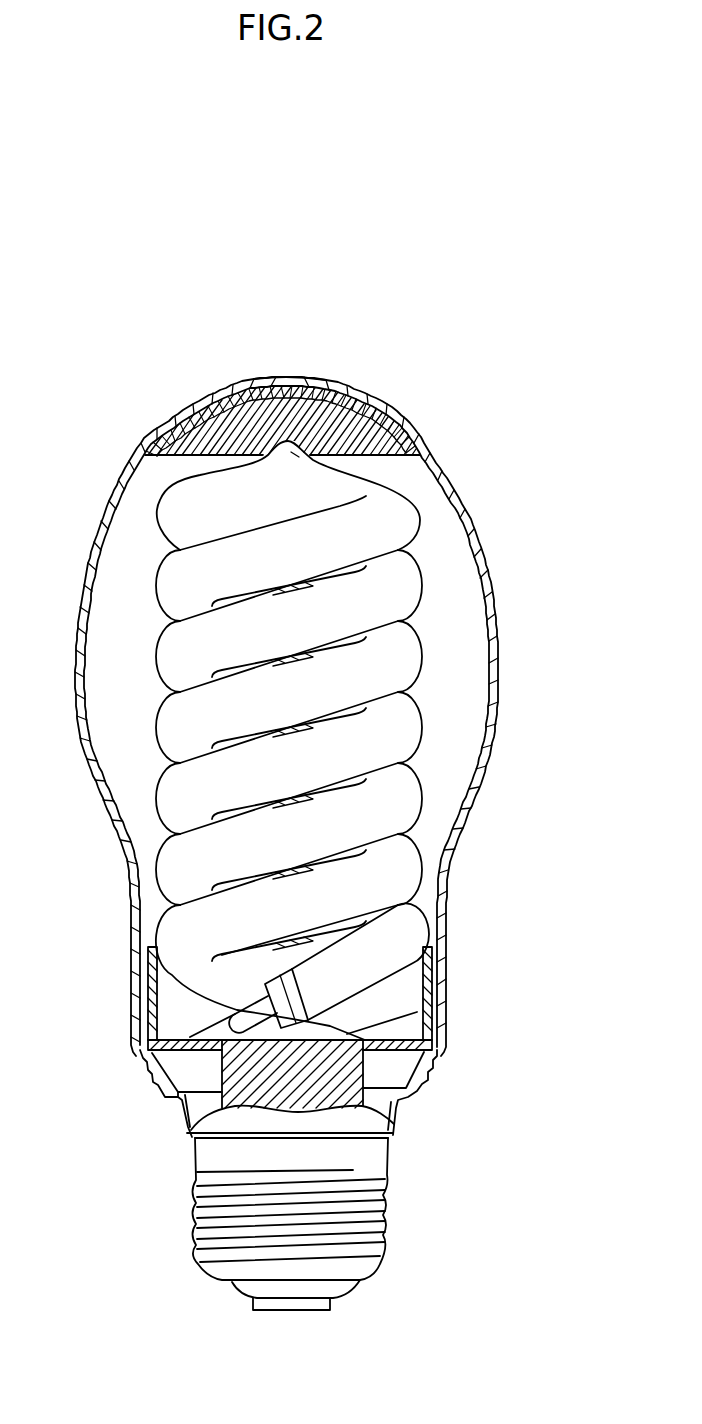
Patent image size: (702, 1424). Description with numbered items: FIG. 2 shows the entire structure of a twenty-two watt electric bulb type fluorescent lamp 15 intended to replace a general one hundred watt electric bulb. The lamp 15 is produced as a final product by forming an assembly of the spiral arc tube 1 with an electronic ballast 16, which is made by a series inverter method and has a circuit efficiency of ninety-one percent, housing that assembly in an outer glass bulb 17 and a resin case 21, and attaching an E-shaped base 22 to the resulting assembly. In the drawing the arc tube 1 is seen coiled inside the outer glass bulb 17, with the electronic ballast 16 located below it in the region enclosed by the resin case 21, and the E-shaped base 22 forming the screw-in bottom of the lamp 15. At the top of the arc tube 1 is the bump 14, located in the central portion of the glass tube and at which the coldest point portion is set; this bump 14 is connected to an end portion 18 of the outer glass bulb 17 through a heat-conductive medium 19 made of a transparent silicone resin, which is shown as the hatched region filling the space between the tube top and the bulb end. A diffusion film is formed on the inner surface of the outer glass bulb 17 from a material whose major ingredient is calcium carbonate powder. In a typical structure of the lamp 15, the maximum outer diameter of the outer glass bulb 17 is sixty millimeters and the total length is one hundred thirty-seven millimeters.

The arc tube 1 is at (433, 662).
The bump 14 is at (390, 427).
The electric bulb type fluorescent lamp 15 is at (308, 242).
The electronic ballast 16 is at (330, 1083).
The outer glass bulb 17 is at (476, 514).
The end portion 18 is at (296, 379).
The heat-conductive medium 19 is at (170, 433).
The resin case 21 is at (145, 1062).
The E-shaped base 22 is at (250, 1283).